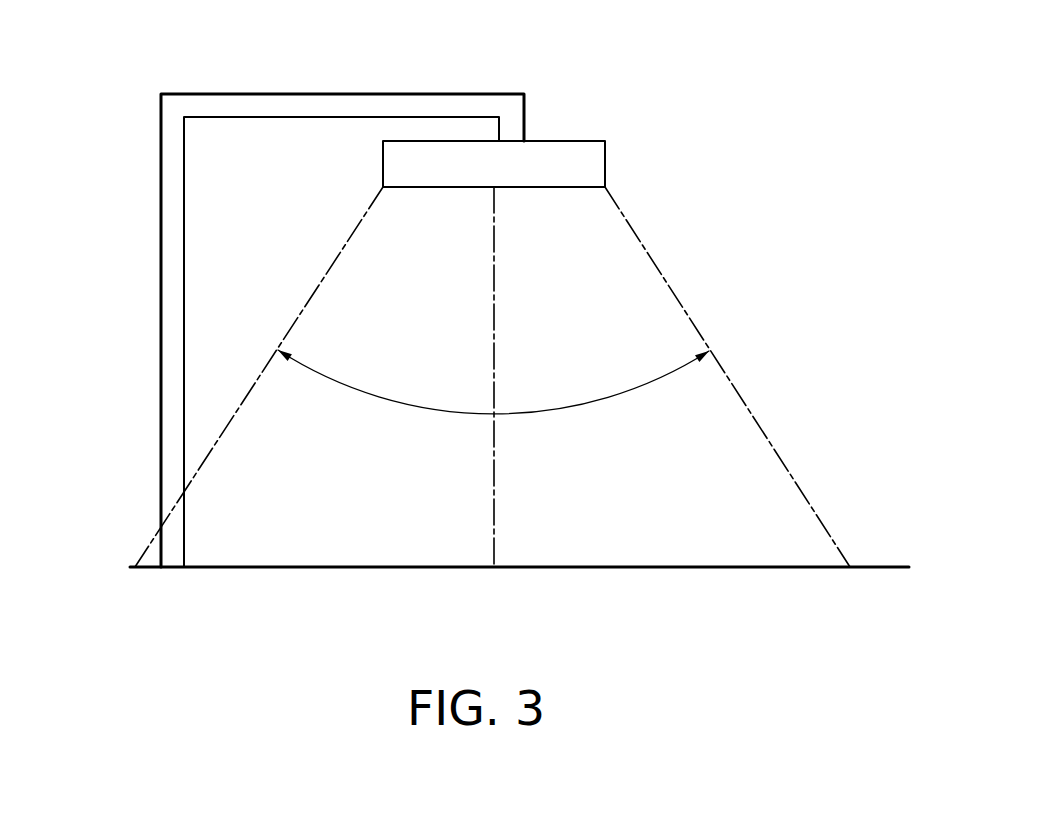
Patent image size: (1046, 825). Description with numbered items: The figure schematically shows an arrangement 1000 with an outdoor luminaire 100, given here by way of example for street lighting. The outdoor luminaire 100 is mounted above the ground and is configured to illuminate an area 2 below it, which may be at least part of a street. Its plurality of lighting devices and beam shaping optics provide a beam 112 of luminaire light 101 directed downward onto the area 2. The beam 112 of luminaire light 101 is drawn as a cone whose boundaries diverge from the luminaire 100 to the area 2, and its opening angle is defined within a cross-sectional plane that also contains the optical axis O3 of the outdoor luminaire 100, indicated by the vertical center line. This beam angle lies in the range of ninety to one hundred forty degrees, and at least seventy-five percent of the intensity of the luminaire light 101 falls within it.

The arrangement 1000 is at (620, 64).
The outdoor luminaire 100 is at (619, 159).
The beam 112 is at (657, 303).
The luminaire light 101 is at (474, 377).
The optical axis O3 is at (493, 352).
The area 2 is at (390, 565).